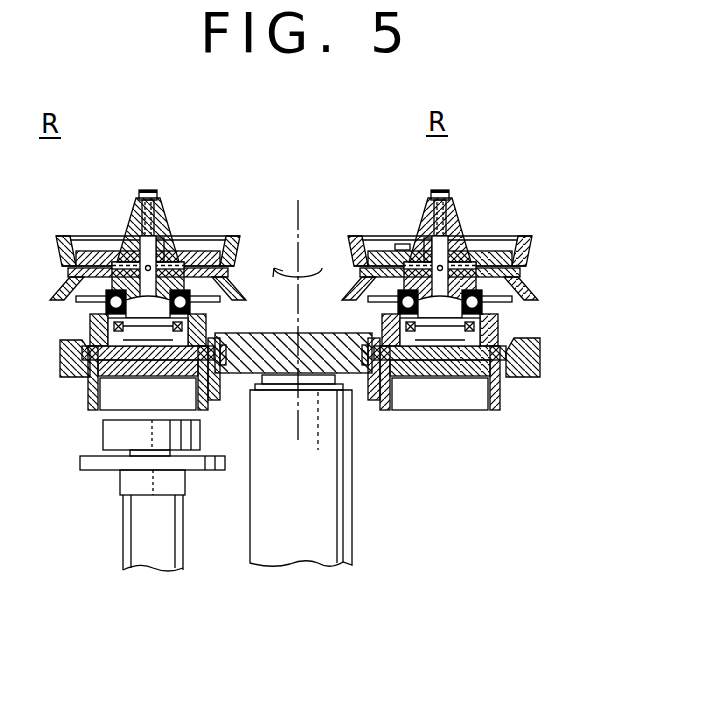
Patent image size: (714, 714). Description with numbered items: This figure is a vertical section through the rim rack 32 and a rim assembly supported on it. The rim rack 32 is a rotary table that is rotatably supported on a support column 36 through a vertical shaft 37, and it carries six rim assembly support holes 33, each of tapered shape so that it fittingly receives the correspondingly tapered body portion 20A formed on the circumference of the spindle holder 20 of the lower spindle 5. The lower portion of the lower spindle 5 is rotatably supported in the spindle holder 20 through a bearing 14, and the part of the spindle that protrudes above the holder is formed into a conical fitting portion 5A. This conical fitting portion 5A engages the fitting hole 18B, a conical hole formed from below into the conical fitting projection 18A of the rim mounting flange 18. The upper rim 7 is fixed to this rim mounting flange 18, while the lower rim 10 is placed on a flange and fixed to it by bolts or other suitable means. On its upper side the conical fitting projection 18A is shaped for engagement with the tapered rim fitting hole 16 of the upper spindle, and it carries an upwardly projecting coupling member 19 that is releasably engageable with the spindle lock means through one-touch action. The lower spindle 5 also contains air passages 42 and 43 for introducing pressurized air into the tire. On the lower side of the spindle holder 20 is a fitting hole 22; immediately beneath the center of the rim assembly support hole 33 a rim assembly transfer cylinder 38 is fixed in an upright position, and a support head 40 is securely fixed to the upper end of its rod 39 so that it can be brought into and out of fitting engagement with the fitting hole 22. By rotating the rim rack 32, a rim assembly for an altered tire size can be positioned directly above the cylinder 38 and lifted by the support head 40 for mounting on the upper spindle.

The lower spindle 5 is at (80, 266).
The conical fitting portion 5A is at (180, 245).
The upper rim 7 is at (228, 252).
The lower rim 10 is at (232, 282).
The bearing 14 is at (108, 302).
The tapered rim fitting hole 16 is at (133, 228).
The rim mounting flange 18 is at (215, 238).
The conical fitting projection 18A is at (176, 250).
The fitting hole 18B is at (400, 232).
The coupling member 19 is at (150, 196).
The spindle holder 20 is at (221, 378).
The tapered fitting body portion 20A is at (248, 350).
The fitting hole 22 is at (120, 394).
The rim rack 32 is at (66, 348).
The rim assembly support hole 33 is at (90, 318).
The support column 36 is at (342, 524).
The vertical shaft 37 is at (312, 382).
The rim assembly transfer cylinder 38 is at (186, 556).
The rod 39 is at (148, 467).
The support head 40 is at (105, 436).
The air passage 42 is at (140, 262).
The air passage 43 is at (126, 272).